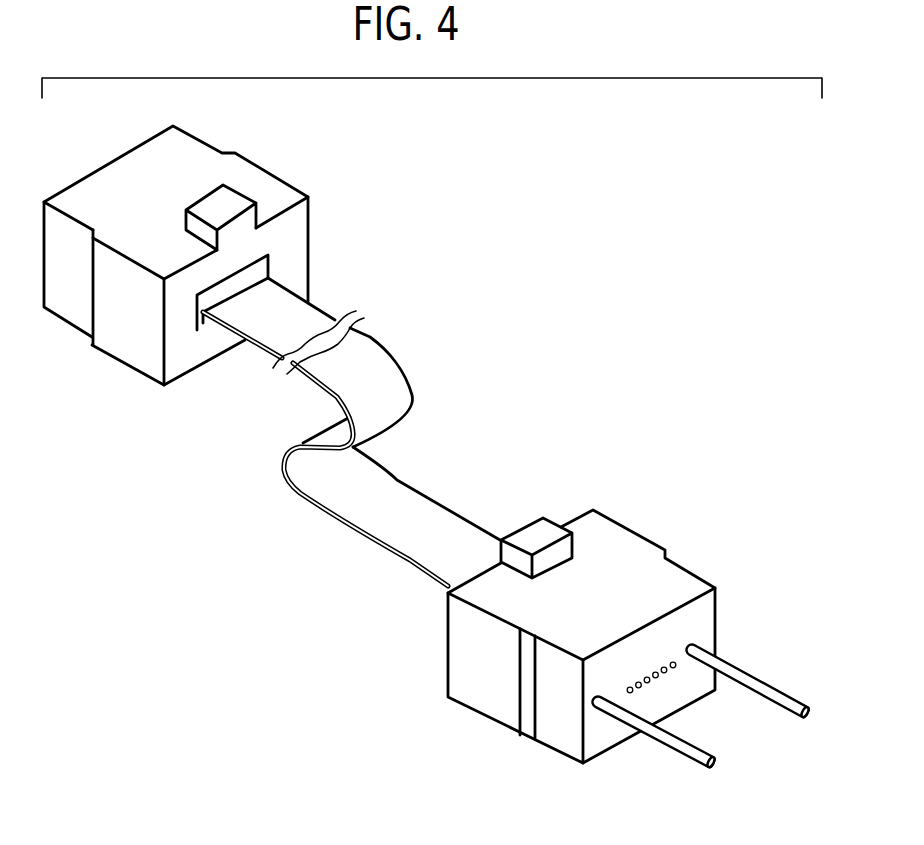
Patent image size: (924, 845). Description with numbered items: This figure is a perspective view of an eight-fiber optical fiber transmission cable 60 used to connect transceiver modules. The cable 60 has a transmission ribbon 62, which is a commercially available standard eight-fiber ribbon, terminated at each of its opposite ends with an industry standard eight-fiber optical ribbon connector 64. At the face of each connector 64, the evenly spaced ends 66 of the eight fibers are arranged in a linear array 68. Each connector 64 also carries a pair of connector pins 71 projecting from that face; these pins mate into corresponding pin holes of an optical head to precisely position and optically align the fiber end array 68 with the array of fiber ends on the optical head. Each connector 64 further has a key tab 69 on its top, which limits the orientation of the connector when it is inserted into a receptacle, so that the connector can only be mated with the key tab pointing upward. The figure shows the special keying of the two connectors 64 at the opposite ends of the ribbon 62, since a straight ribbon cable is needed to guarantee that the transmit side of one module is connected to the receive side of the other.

The optical fiber transmission cable 60 is at (335, 541).
The transmission ribbon 62 is at (382, 365).
The optical ribbon connector 64 is at (234, 167).
The fiber ends 66 is at (634, 689).
The linear array 68 is at (662, 668).
The key tab 69 is at (209, 205).
The connector pins 71 is at (753, 680).